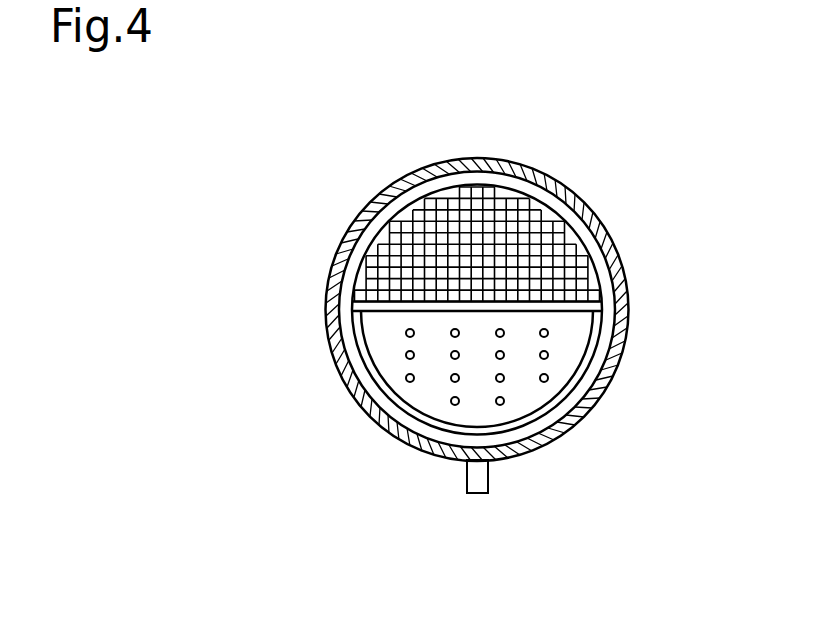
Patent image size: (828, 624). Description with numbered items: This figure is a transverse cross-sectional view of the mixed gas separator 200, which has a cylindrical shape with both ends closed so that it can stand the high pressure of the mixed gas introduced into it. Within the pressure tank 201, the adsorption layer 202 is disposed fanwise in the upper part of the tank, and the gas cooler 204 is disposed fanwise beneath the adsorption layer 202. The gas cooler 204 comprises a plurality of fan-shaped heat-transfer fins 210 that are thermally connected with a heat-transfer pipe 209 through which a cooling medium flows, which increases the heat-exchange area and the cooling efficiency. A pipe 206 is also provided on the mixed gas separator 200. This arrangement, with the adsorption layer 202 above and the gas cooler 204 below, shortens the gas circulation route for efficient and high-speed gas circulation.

The mixed gas separator 200 is at (317, 198).
The pressure tank 201 is at (543, 175).
The adsorption layer 202 is at (575, 256).
The gas cooler 204 is at (382, 353).
The pipe 206 is at (488, 478).
The heat-transfer pipe 209 is at (413, 381).
The heat-transfer fins 210 is at (577, 351).